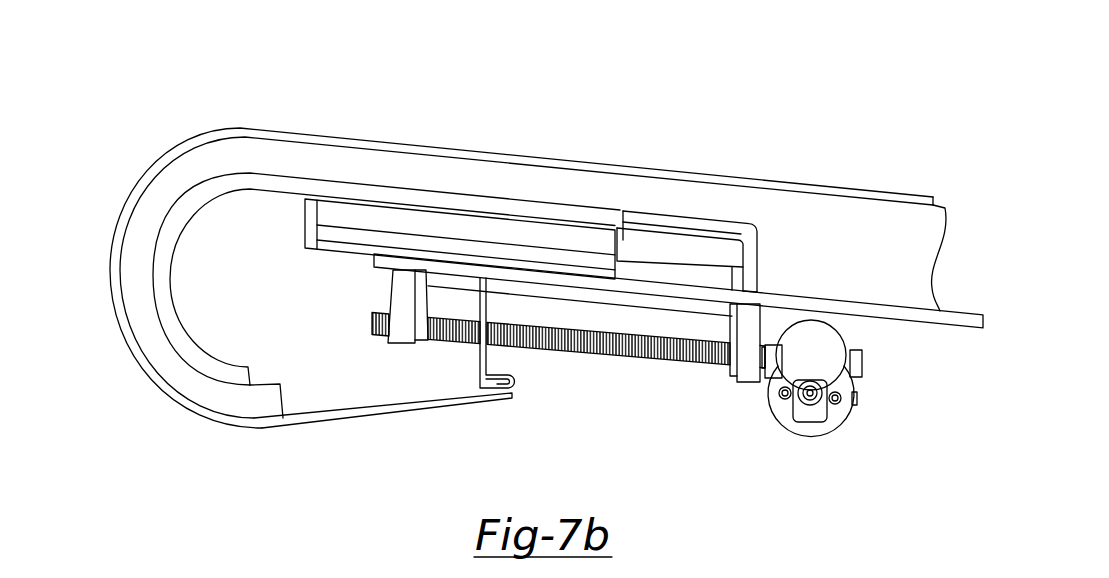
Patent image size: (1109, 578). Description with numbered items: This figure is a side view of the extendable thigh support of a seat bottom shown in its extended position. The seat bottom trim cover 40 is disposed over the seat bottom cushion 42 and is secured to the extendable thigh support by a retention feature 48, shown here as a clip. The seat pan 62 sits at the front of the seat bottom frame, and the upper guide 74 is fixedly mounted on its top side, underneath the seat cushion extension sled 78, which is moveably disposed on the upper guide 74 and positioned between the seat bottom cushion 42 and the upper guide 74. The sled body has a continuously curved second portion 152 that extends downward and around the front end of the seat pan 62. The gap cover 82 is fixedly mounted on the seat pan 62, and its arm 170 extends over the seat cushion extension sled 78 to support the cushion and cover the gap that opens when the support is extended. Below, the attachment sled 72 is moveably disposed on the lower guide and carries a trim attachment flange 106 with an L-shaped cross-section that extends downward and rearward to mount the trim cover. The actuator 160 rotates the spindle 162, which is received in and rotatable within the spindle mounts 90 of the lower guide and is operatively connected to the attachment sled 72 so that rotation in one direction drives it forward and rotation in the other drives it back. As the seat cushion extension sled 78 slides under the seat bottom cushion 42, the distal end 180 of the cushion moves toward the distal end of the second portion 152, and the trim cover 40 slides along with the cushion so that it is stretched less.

The seat bottom trim cover 40 is at (165, 167).
The seat bottom cushion 42 is at (268, 152).
The retention feature 48 is at (514, 379).
The second portion 152 is at (173, 290).
The distal end 180 is at (280, 400).
The seat cushion extension sled 78 is at (392, 190).
The attachment sled 72 is at (412, 291).
The seat pan 62 is at (907, 318).
The arm 170 is at (643, 213).
The upper guide 74 is at (704, 237).
The gap cover 82 is at (760, 256).
The spindle mount 90 is at (403, 345).
The spindle 162 is at (688, 352).
The trim attachment flange 106 is at (480, 388).
The actuator 160 is at (828, 361).